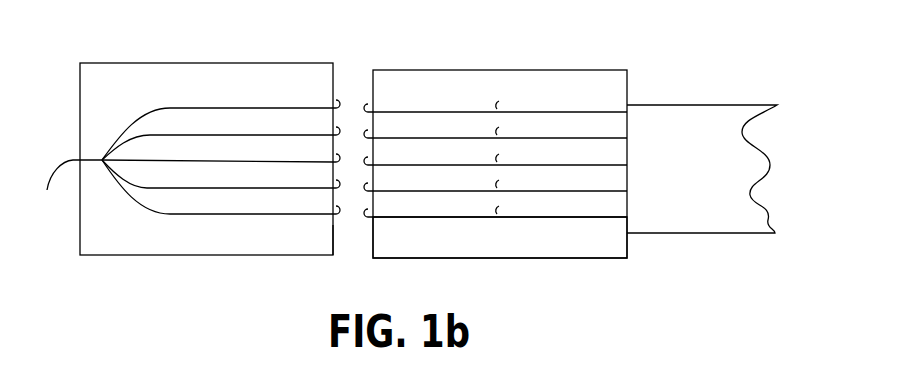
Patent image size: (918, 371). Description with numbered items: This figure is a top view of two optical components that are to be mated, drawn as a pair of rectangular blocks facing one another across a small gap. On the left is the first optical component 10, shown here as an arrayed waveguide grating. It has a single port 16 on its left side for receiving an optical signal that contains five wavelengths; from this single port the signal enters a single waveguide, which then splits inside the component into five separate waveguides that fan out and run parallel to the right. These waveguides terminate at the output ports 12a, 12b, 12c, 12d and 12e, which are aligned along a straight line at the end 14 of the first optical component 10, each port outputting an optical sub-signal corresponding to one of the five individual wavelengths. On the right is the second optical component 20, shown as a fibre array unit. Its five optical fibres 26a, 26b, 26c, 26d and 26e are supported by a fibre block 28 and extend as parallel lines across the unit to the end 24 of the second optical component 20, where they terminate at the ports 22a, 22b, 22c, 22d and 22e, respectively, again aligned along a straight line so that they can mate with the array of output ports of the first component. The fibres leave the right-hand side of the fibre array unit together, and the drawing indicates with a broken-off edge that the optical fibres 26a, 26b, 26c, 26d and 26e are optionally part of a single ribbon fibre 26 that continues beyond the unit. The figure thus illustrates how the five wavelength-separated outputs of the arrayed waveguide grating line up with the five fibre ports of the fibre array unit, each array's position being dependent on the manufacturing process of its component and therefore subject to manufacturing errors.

The first optical component 10 is at (185, 64).
The output port 12a is at (221, 123).
The output port 12b is at (221, 137).
The output port 12c is at (221, 153).
The output port 12d is at (221, 175).
The output port 12e is at (221, 188).
The end of the first optical component 14 is at (334, 233).
The single port 16 is at (66, 190).
The second optical component 20 is at (493, 70).
The port 22a is at (500, 103).
The port 22b is at (500, 129).
The port 22c is at (500, 156).
The port 22d is at (500, 182).
The port 22e is at (500, 208).
The end of the second optical component 24 is at (373, 82).
The ribbon fibre 26 is at (660, 122).
The optical fibre 26a is at (517, 103).
The optical fibre 26b is at (517, 129).
The optical fibre 26c is at (516, 156).
The optical fibre 26d is at (517, 182).
The optical fibre 26e is at (517, 208).
The fibre block 28 is at (517, 243).